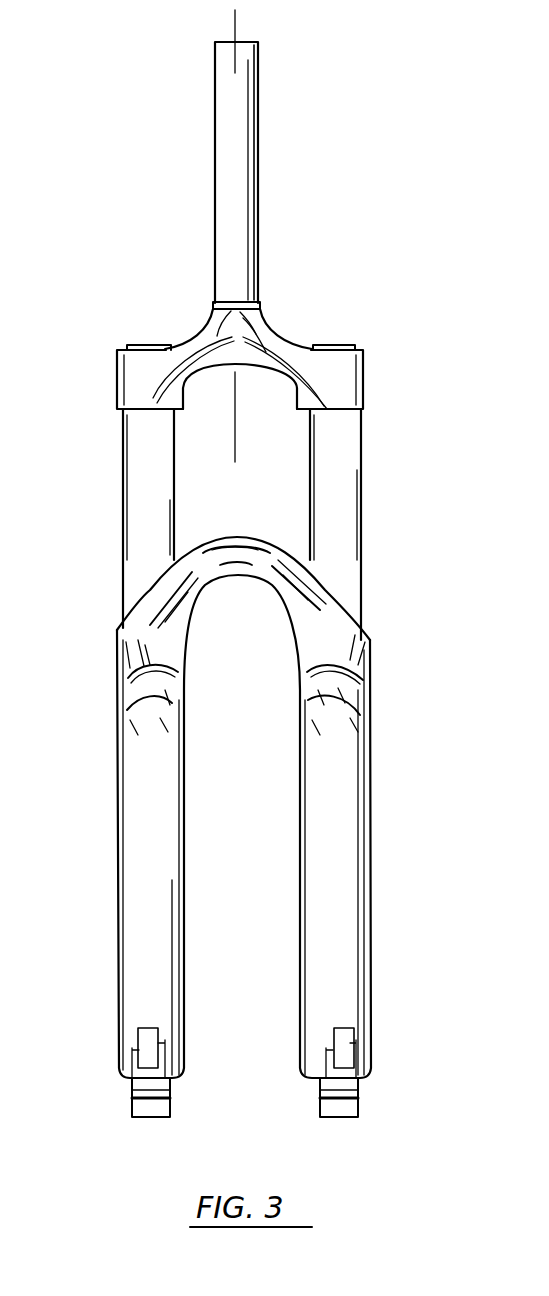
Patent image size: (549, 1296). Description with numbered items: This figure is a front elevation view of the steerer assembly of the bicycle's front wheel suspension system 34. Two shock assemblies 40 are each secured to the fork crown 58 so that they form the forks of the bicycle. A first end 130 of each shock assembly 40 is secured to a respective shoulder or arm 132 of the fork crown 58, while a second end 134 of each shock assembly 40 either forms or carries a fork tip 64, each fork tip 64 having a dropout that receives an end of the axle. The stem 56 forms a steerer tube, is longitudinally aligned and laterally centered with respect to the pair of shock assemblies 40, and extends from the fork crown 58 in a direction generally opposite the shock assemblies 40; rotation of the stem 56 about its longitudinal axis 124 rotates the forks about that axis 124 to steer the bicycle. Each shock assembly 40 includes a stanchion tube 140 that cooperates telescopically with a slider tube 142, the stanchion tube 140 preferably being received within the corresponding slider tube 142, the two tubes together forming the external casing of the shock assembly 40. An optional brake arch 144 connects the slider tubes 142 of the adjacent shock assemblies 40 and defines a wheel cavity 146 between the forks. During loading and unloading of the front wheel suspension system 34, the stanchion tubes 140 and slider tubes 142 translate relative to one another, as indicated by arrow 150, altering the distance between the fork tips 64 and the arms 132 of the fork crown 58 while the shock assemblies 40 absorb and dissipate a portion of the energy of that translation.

The longitudinal axis 124 is at (236, 28).
The stem 56 is at (248, 150).
The front wheel suspension system 34 is at (418, 270).
The fork crown 58 is at (272, 346).
The arm 132 is at (127, 370).
The first end 130 is at (92, 398).
The stanchion tube 140 is at (127, 448).
The shock assembly 40 is at (135, 495).
The arrow 150 is at (418, 585).
The brake arch 144 is at (258, 547).
The slider tube 142 is at (125, 808).
The second end 134 is at (118, 1098).
The fork tip 64 is at (146, 1112).
The wheel cavity 146 is at (229, 1101).